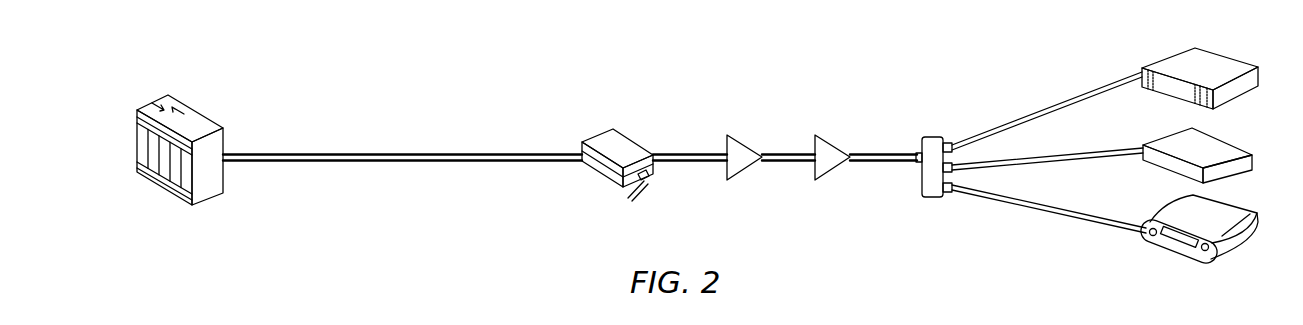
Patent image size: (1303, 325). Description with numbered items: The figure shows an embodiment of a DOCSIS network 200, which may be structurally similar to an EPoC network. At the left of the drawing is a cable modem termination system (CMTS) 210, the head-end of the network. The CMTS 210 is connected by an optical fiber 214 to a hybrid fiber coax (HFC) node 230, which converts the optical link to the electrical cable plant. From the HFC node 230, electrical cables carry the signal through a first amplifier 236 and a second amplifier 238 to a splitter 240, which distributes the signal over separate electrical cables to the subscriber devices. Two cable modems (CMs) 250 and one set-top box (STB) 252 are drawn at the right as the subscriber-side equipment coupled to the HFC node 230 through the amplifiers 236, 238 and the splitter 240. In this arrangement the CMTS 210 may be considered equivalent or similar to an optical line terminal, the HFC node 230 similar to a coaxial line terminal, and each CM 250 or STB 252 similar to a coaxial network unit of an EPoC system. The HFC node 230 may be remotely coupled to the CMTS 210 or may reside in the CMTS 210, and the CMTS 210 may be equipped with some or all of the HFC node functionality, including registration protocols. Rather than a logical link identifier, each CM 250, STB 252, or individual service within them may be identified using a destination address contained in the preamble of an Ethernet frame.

The DOCSIS network 200 is at (118, 56).
The cable modem termination system 210 is at (200, 108).
The optical fiber 214 is at (447, 149).
The hybrid fiber coax node 230 is at (633, 139).
The amplifier 236 is at (742, 172).
The amplifier 238 is at (828, 172).
The splitter 240 is at (932, 199).
The cable modem 250 is at (1232, 50).
The set-top box 252 is at (1233, 248).